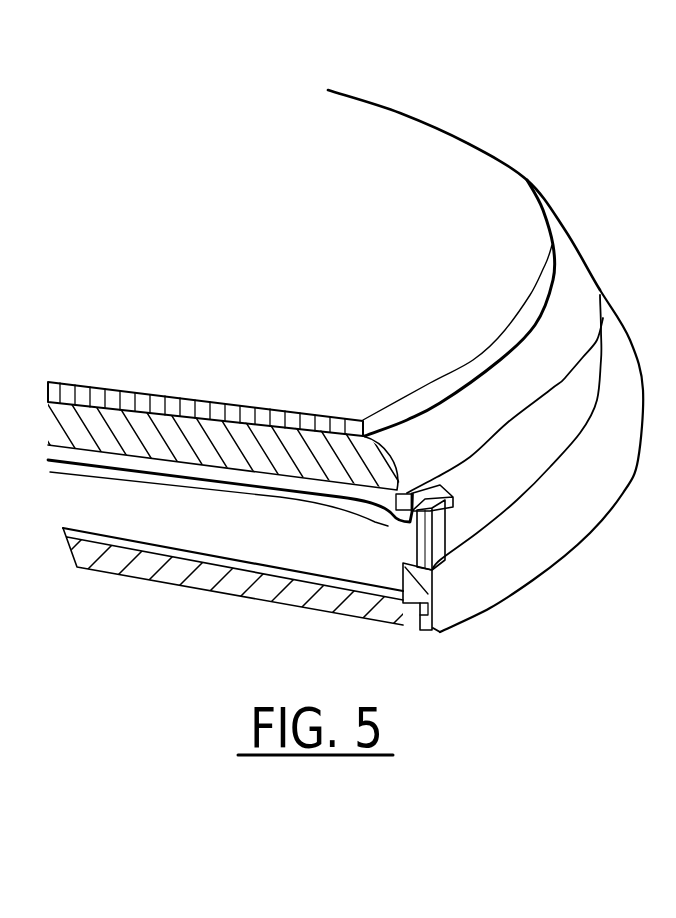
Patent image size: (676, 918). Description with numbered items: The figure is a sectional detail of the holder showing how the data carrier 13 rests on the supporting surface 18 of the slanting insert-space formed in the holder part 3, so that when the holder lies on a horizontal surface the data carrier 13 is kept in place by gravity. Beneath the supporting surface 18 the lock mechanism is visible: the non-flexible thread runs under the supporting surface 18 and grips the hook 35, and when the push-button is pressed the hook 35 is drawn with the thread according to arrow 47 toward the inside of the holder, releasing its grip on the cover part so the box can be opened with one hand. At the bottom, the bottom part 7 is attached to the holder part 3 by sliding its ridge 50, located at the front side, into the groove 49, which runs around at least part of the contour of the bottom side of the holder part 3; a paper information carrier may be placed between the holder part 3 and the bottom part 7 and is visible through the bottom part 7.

The holder part 3 is at (645, 275).
The bottom part 7 is at (182, 578).
The data carrier 13 is at (477, 177).
The supporting surface 18 is at (372, 453).
The hook 35 is at (437, 530).
The arrow 47 is at (262, 528).
The groove 49 is at (448, 642).
The ridge 50 is at (407, 618).